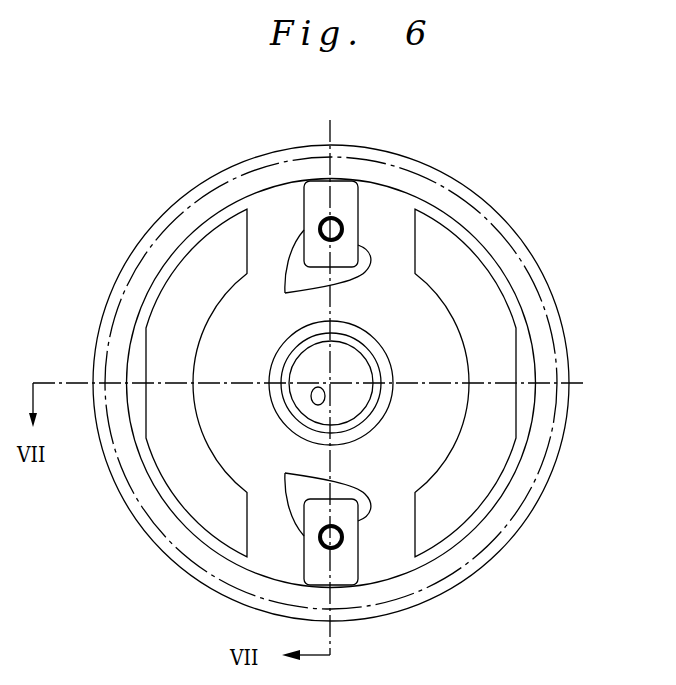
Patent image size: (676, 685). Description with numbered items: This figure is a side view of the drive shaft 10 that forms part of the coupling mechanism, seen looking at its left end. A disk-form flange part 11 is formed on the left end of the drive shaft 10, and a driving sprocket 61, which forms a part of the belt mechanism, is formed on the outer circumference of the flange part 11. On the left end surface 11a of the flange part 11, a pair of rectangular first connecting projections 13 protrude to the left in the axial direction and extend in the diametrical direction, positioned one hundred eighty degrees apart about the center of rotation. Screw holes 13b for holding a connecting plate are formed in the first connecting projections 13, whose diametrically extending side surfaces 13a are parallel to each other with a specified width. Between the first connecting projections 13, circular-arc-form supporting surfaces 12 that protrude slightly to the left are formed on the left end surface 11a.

The drive shaft 10 is at (566, 241).
The flange part 11 is at (265, 553).
The left end surface 11a is at (432, 456).
The circular-arc-form supporting surfaces 12 is at (170, 453).
The first connecting projections 13 is at (348, 197).
The side surfaces 13a is at (285, 293).
The screw holes 13b is at (348, 227).
The driving sprocket 61 is at (503, 540).